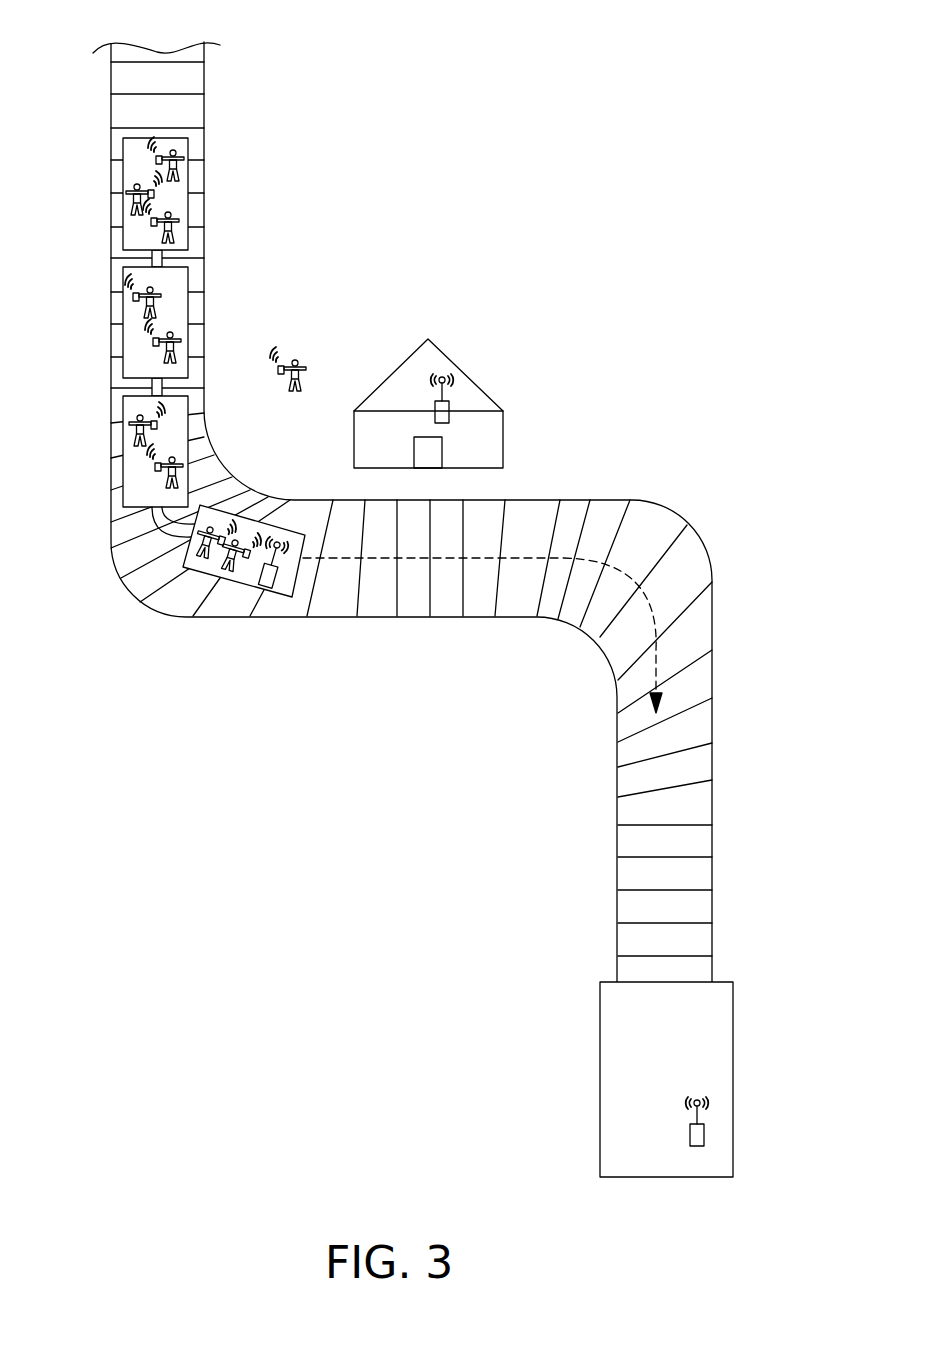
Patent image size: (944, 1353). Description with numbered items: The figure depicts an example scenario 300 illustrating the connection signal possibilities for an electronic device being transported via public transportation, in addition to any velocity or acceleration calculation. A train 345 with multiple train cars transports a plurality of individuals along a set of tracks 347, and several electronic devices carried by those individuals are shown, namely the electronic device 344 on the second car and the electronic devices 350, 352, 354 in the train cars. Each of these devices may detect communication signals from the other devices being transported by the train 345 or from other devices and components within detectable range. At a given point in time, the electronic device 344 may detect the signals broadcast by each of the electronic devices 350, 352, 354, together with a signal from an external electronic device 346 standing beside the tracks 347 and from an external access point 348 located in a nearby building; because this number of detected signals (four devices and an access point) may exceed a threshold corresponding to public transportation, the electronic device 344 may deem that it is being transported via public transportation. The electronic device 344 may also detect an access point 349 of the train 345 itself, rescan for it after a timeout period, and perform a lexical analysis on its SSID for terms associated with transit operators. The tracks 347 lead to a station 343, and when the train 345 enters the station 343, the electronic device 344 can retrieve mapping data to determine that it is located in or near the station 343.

The scenario 300 is at (587, 56).
The station 343 is at (609, 1068).
The electronic device 344 is at (158, 464).
The train 345 is at (230, 583).
The external electronic device 346 is at (276, 366).
The tracks 347 is at (345, 567).
The external access point 348 is at (446, 412).
The access point 349 is at (278, 576).
The electronic device 350 is at (141, 416).
The electronic device 352 is at (233, 528).
The electronic device 354 is at (252, 545).